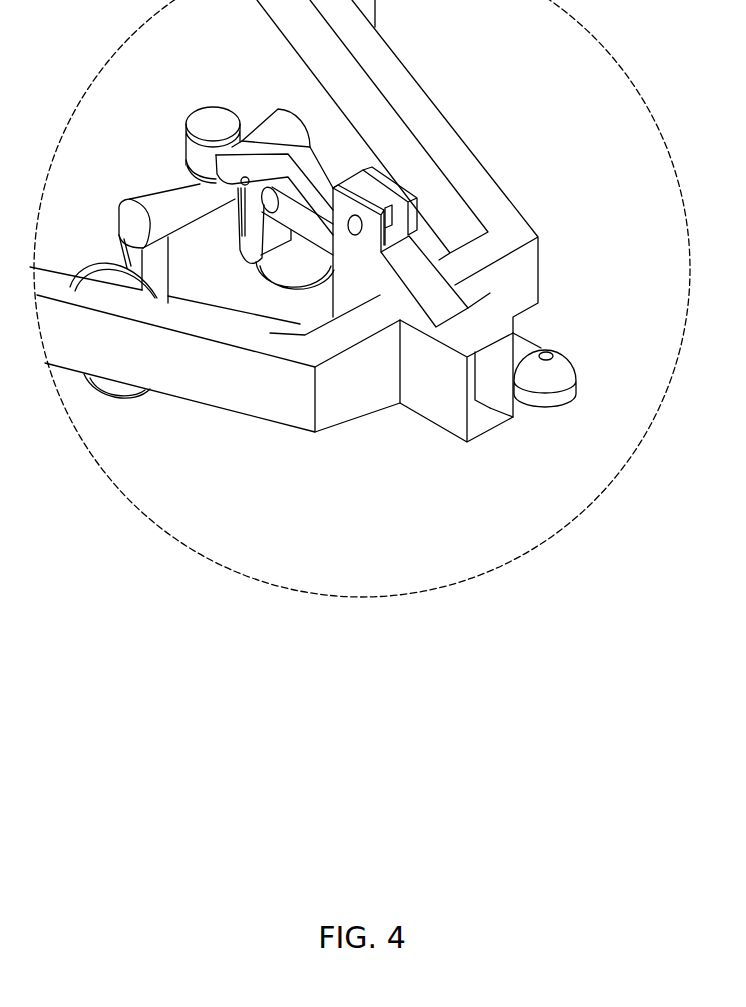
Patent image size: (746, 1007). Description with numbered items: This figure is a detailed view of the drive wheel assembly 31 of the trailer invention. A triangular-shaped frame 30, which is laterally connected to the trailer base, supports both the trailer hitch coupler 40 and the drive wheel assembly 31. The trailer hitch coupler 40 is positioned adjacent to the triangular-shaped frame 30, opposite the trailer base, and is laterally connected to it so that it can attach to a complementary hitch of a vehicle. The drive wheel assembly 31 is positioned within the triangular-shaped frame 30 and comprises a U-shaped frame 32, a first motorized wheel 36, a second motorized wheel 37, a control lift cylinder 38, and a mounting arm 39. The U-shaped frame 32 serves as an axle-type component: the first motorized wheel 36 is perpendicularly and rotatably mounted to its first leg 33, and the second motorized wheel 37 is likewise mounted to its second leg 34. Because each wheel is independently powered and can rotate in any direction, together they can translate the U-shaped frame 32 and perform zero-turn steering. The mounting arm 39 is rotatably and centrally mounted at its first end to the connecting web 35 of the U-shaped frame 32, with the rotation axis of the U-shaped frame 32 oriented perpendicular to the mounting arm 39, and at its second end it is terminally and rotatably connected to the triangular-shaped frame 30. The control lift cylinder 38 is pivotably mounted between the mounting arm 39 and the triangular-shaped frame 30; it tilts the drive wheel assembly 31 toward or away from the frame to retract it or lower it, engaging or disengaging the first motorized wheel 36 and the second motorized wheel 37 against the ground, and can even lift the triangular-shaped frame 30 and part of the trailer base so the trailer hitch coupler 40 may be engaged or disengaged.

The triangular-shaped frame 30 is at (250, 410).
The drive wheel assembly 31 is at (355, 90).
The U-shaped frame 32 is at (158, 151).
The first leg 33 is at (253, 253).
The second leg 34 is at (165, 292).
The connecting web 35 is at (222, 205).
The first motorized wheel 36 is at (287, 284).
The second motorized wheel 37 is at (122, 388).
The control lift cylinder 38 is at (322, 248).
The mounting arm 39 is at (331, 173).
The trailer hitch coupler 40 is at (575, 346).